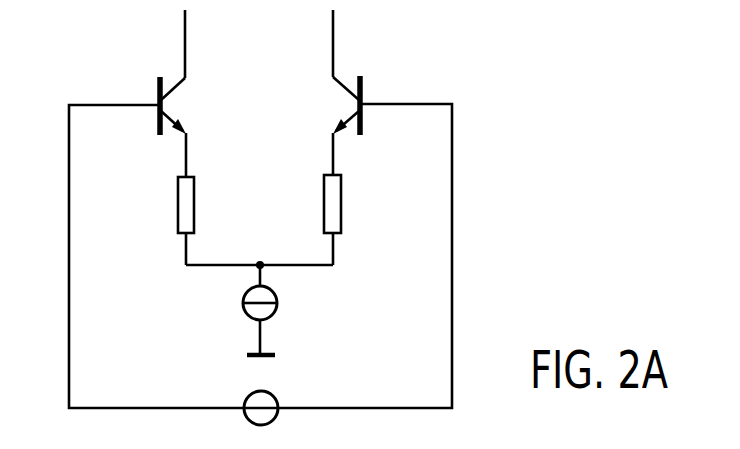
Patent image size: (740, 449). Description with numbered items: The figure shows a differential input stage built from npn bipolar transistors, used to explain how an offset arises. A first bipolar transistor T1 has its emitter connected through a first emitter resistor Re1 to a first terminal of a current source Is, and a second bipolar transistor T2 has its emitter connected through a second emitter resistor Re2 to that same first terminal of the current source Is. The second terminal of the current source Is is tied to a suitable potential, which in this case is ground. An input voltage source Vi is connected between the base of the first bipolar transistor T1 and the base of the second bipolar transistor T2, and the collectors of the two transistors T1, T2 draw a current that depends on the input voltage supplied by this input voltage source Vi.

The first bipolar transistor T1 is at (181, 97).
The second bipolar transistor T2 is at (340, 107).
The first emitter resistor Re1 is at (180, 200).
The second emitter resistor Re2 is at (336, 197).
The current source Is is at (295, 290).
The input voltage source Vi is at (274, 416).